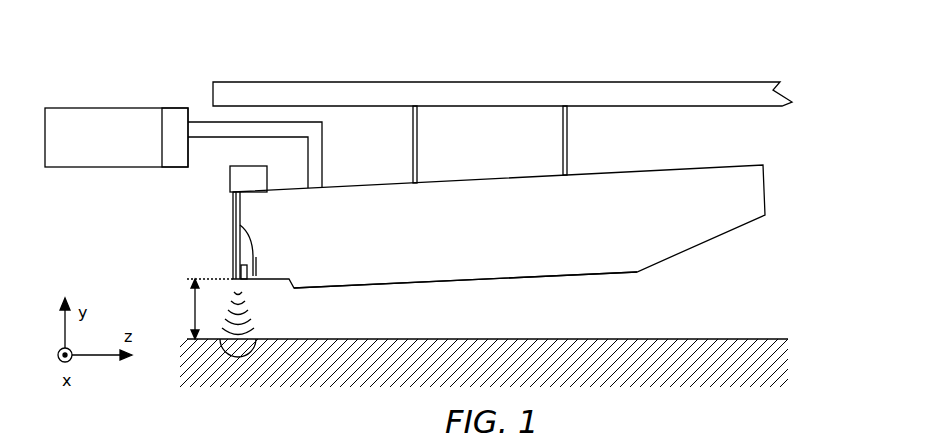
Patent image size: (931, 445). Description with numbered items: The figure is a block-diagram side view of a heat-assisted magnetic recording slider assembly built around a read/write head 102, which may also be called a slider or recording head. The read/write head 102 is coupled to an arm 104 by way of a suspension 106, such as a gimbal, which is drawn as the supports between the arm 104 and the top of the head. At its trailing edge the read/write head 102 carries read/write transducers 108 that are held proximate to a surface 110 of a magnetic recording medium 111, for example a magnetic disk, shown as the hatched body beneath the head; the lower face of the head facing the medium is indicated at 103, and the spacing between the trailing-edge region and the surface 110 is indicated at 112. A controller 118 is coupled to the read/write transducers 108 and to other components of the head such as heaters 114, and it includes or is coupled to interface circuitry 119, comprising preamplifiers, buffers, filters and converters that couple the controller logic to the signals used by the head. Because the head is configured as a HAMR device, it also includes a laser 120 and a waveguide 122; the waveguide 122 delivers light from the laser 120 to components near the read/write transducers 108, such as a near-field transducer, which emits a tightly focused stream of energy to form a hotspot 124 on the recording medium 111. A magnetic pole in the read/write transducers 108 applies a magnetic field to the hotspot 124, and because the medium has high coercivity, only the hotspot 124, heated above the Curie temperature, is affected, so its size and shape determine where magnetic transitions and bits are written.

The read/write head 102 is at (675, 172).
The air bearing surface 103 is at (377, 286).
The arm 104 is at (720, 88).
The suspension 106 is at (568, 140).
The read/write transducers 108 is at (235, 266).
The surface 110 is at (676, 339).
The magnetic recording medium 111 is at (687, 377).
The fly height spacing 112 is at (194, 309).
The heaters 114 is at (237, 237).
The controller 118 is at (97, 108).
The interface circuitry 119 is at (170, 108).
The laser 120 is at (247, 173).
The waveguide 122 is at (235, 212).
The hotspot 124 is at (255, 337).